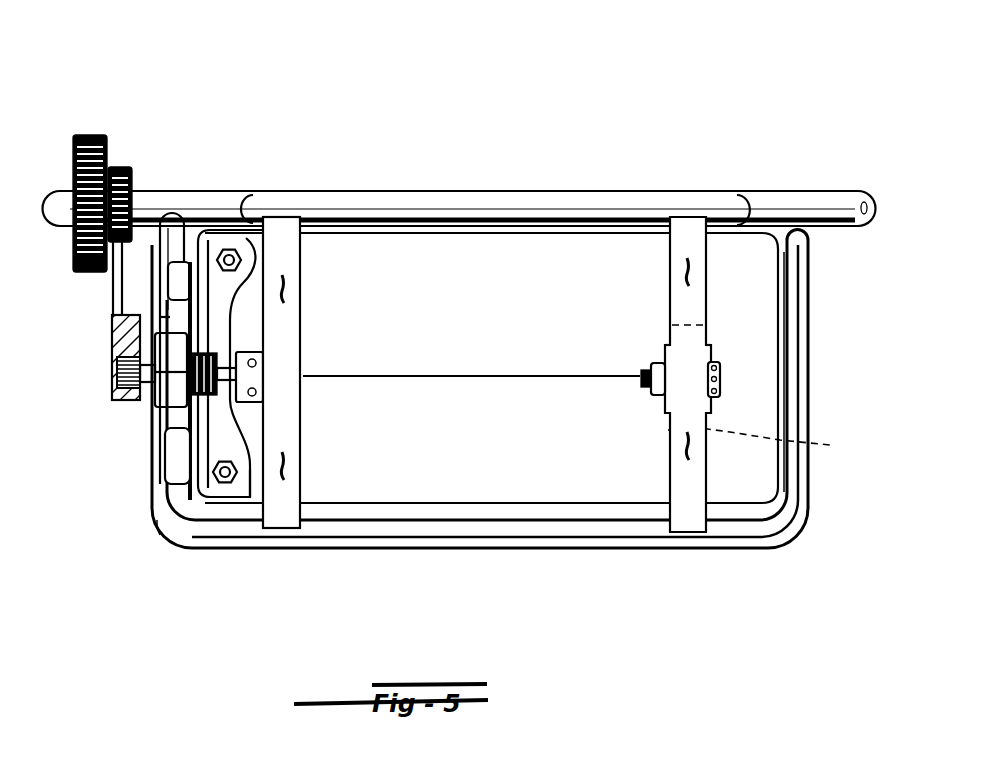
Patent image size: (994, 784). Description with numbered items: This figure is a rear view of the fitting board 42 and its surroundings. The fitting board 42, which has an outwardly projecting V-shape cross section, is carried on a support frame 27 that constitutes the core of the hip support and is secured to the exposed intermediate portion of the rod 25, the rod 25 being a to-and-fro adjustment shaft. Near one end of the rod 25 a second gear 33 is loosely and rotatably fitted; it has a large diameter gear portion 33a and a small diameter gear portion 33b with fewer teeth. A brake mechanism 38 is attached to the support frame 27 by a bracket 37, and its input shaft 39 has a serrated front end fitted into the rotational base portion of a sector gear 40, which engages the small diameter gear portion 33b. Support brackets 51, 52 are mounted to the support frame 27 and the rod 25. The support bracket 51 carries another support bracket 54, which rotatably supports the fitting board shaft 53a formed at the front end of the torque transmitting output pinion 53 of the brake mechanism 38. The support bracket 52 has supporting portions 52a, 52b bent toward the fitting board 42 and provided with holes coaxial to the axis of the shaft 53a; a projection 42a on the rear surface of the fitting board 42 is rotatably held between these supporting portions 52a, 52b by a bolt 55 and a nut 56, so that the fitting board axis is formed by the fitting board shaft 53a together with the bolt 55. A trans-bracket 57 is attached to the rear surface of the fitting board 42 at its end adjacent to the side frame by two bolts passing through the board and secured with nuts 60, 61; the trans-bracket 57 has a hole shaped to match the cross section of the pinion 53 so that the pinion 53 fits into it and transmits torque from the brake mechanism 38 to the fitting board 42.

The rod 25 is at (681, 193).
The support frame 27 is at (537, 537).
The second gear 33 is at (143, 145).
The large diameter gear portion 33a is at (92, 135).
The small diameter gear portion 33b is at (121, 165).
The bracket 37 is at (172, 470).
The brake mechanism 38 is at (112, 319).
The input shaft 39 is at (147, 393).
The sector gear 40 is at (112, 333).
The fitting board 42 is at (630, 492).
The projection 42a is at (774, 444).
The support bracket 51 is at (291, 505).
The support bracket 52 is at (690, 498).
The supporting portion 52a is at (713, 347).
The supporting portion 52b is at (663, 350).
The torque transmitting output pinion 53 is at (200, 500).
The fitting board shaft 53a is at (240, 480).
The support bracket 54 is at (262, 354).
The bolt 55 is at (722, 375).
The nut 56 is at (657, 397).
The trans-bracket 57 is at (245, 245).
The nut 60 is at (228, 247).
The nut 61 is at (226, 484).